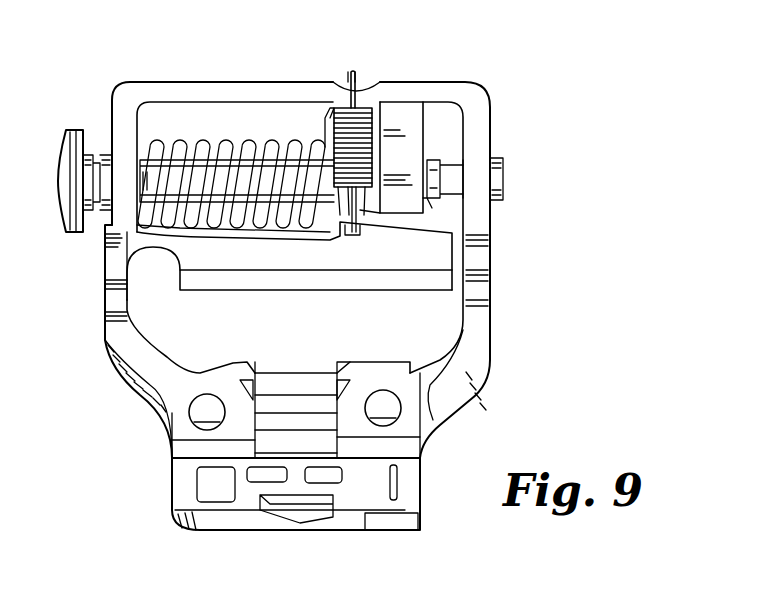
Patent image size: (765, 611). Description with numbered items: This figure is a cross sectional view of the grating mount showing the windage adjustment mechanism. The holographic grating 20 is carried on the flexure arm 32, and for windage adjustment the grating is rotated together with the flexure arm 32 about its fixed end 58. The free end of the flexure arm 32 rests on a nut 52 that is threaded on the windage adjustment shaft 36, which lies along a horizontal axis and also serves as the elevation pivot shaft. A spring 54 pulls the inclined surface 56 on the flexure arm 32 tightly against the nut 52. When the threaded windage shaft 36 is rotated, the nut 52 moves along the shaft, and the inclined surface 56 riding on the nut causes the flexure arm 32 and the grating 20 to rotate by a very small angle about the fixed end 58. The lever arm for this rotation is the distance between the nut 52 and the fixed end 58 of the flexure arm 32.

The holographic grating 20 is at (375, 277).
The flexure arm 32 is at (277, 253).
The windage adjustment shaft 36 is at (440, 168).
The nut 52 is at (408, 118).
The spring 54 is at (373, 113).
The inclined surface 56 is at (447, 197).
The fixed end of the flexure arm 58 is at (153, 247).